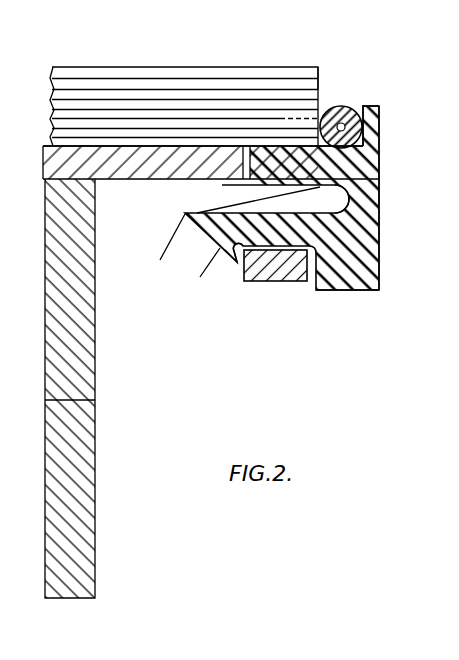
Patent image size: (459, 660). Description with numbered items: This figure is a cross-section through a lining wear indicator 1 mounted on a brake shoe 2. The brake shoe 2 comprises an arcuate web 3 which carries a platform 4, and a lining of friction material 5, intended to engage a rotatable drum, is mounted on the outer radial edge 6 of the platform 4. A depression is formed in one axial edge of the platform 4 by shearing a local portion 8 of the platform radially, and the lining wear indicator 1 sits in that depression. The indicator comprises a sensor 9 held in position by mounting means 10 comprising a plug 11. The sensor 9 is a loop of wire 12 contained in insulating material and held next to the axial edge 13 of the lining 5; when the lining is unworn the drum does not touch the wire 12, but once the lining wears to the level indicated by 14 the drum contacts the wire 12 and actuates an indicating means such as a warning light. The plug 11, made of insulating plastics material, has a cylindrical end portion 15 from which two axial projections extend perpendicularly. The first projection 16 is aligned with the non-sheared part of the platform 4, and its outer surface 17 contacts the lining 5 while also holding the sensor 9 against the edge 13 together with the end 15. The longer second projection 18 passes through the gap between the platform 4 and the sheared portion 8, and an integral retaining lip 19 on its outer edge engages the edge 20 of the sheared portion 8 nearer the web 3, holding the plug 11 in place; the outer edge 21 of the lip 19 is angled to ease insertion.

The lining wear indicator 1 is at (382, 183).
The brake shoe 2 is at (98, 340).
The arcuate web 3 is at (86, 436).
The platform 4 is at (127, 176).
The lining of friction material 5 is at (222, 78).
The outer radial edge 6 is at (118, 147).
The sheared portion 8 is at (278, 277).
The sensor 9 is at (355, 104).
The mounting means 10 is at (381, 227).
The plug 11 is at (381, 267).
The loop of wire 12 is at (341, 105).
The axial edge of the lining 13 is at (320, 70).
The wear level 14 is at (293, 119).
The cylindrical end portion 15 is at (373, 130).
The first projection 16 is at (252, 180).
The outer surface 17 is at (274, 158).
The second projection 18 is at (306, 212).
The retaining lip 19 is at (239, 264).
The edge of the sheared portion 20 is at (240, 258).
The outer edge of the lip 21 is at (207, 247).